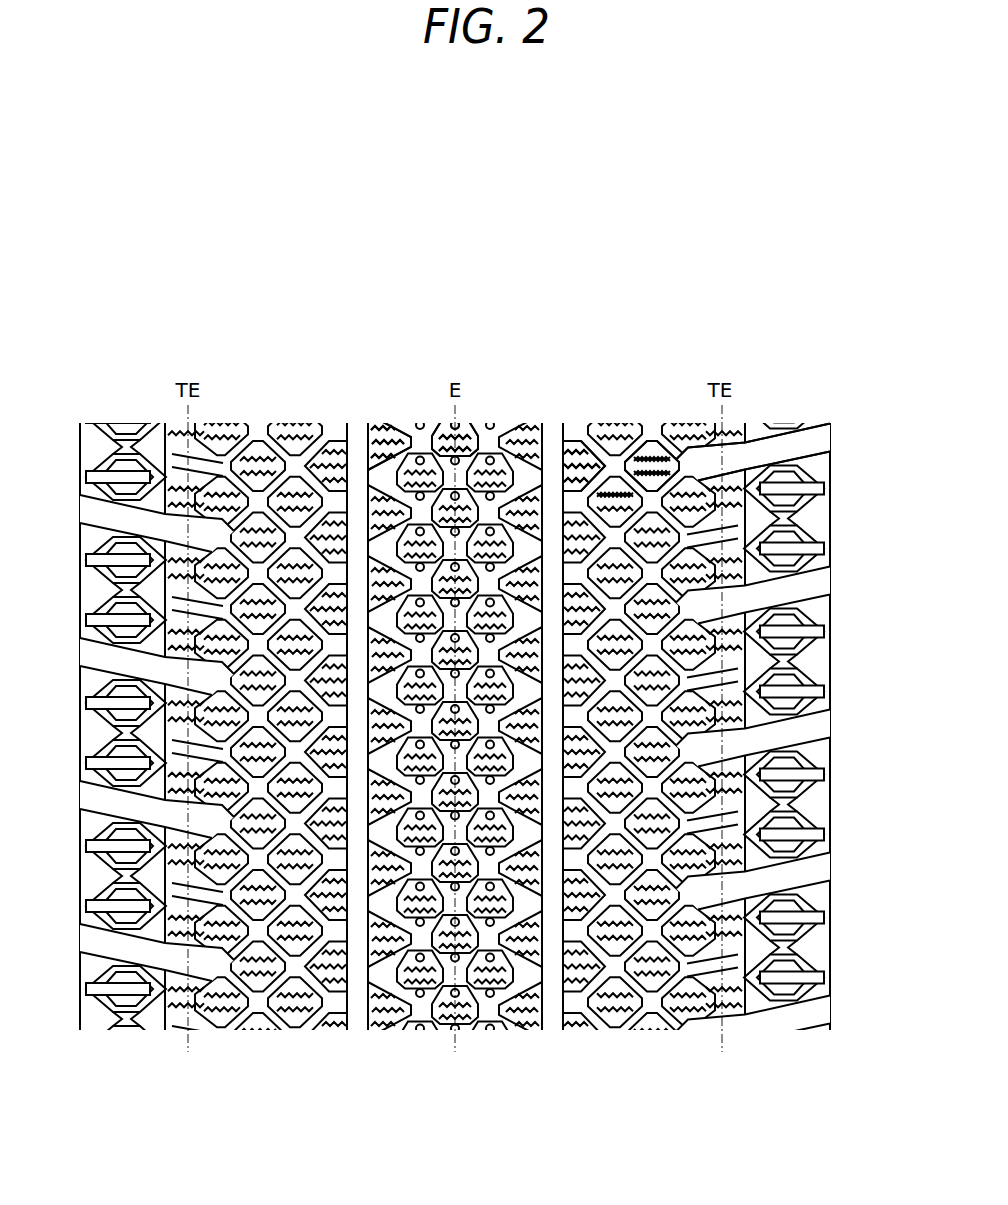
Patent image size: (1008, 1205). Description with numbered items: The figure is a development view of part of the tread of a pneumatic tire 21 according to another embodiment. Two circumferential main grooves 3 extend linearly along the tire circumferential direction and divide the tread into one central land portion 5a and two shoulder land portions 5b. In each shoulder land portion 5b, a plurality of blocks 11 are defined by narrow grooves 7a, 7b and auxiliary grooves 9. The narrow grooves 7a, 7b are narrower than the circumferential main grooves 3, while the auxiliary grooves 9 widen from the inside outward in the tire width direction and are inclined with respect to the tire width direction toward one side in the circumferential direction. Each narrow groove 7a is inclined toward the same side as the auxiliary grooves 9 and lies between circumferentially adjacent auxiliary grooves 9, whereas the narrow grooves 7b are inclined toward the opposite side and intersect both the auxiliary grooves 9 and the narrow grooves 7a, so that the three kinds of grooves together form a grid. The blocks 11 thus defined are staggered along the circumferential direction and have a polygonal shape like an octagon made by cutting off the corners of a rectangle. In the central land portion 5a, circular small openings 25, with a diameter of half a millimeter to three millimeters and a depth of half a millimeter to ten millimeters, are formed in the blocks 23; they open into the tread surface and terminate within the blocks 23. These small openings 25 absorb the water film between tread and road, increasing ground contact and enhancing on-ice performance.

The tire 21 is at (812, 373).
The circumferential main groove 3 is at (355, 433).
The central land portion 5a is at (540, 355).
The shoulder land portion 5b is at (345, 355).
The block 23 is at (434, 441).
The small opening 25 is at (412, 440).
The narrow groove 7a is at (646, 448).
The narrow groove 7b is at (597, 448).
The auxiliary groove 9 is at (680, 480).
The block 11 is at (613, 488).